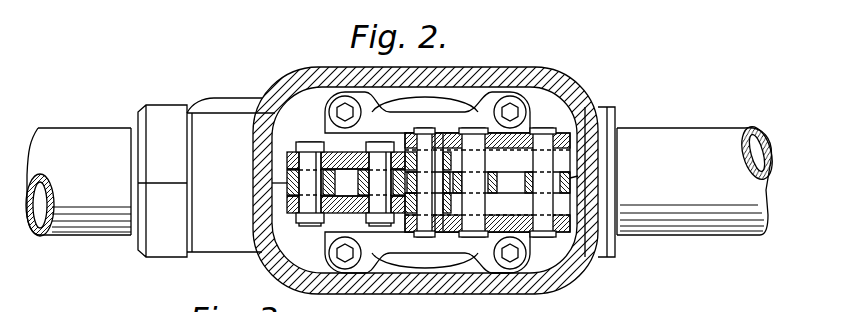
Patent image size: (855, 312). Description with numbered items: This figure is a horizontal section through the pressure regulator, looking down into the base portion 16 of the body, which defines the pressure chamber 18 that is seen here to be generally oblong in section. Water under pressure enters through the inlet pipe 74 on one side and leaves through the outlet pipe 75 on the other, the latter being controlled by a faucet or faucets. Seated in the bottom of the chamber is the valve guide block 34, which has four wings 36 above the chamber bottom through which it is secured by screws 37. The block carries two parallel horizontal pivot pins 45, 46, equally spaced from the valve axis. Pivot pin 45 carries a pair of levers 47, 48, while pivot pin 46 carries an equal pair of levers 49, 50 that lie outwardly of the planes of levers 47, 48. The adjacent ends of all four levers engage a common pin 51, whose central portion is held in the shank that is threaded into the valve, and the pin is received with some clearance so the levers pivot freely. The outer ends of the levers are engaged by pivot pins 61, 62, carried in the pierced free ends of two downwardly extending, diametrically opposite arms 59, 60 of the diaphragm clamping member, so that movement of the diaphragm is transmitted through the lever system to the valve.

The base portion 16 is at (582, 280).
The pressure chamber 18 is at (292, 102).
The valve guide block 34 is at (453, 258).
The wings 36 is at (487, 102).
The screws 37 is at (528, 100).
The pivot pin 45 is at (368, 218).
The pivot pin 46 is at (470, 242).
The lever 47 is at (347, 152).
The lever 48 is at (330, 220).
The lever 49 is at (447, 132).
The lever 50 is at (530, 247).
The pin 51 is at (460, 238).
The arm 59 is at (272, 183).
The arm 60 is at (572, 178).
The pivot pin 61 is at (318, 128).
The pivot pin 62 is at (527, 112).
The pipe 74 is at (72, 148).
The outlet pipe 75 is at (666, 135).